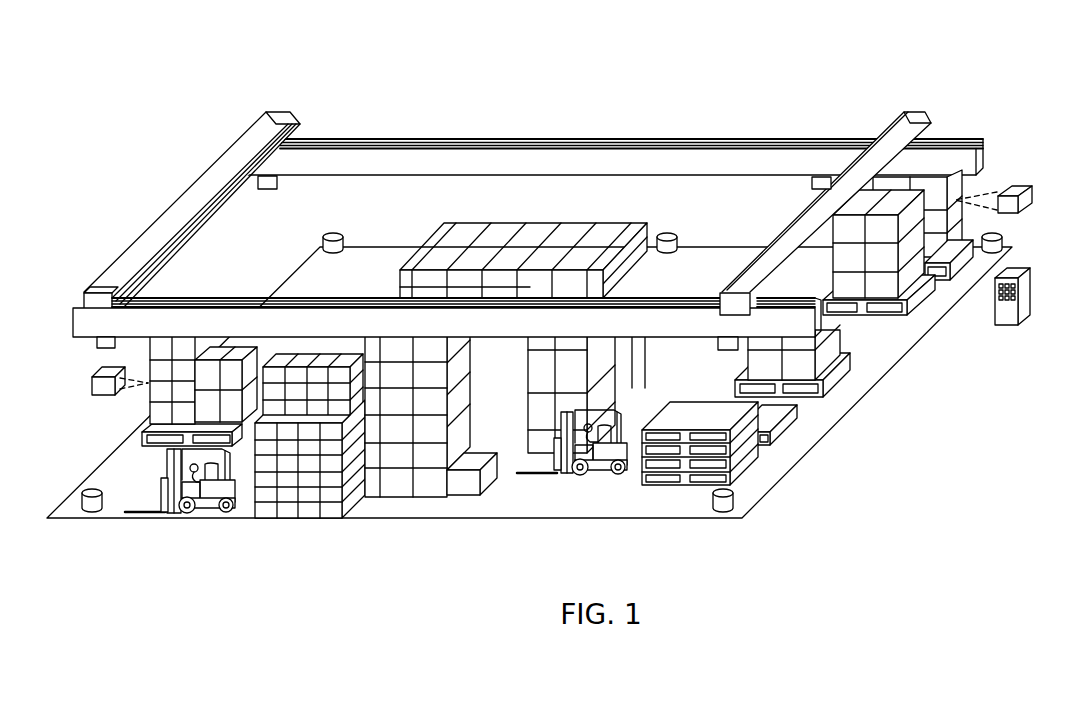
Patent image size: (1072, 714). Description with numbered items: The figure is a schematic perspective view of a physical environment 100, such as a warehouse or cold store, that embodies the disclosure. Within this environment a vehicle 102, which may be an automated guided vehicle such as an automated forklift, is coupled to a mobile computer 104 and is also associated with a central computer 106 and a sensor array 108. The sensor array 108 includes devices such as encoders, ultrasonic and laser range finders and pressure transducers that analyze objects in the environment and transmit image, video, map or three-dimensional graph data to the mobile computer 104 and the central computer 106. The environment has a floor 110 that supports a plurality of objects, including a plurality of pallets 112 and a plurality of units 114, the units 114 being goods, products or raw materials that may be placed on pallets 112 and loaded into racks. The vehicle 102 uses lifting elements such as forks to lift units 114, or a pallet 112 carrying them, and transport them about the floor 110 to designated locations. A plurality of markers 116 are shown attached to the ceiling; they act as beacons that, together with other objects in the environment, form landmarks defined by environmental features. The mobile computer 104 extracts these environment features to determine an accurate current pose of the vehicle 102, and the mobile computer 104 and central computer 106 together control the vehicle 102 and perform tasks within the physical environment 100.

The physical environment 100 is at (768, 48).
The vehicle 102 is at (376, 478).
The mobile computer 104 is at (558, 458).
The central computer 106 is at (1006, 326).
The sensor array 108 is at (563, 427).
The floor 110 is at (657, 500).
The pallets 112 is at (838, 372).
The units 114 is at (1020, 186).
The markers 116 is at (267, 190).